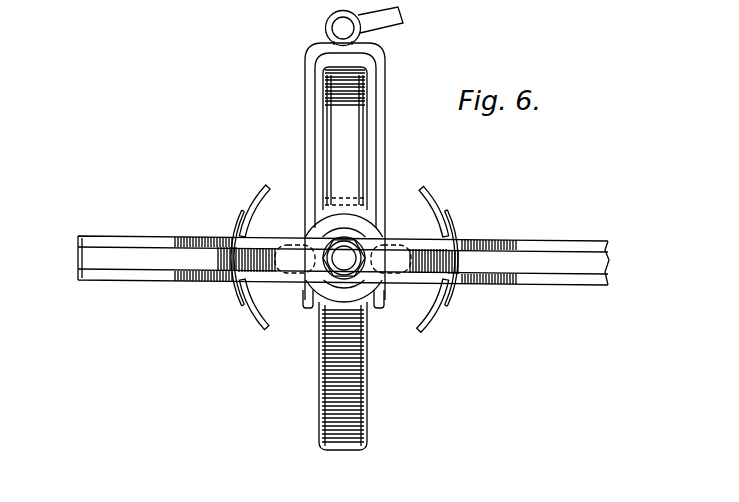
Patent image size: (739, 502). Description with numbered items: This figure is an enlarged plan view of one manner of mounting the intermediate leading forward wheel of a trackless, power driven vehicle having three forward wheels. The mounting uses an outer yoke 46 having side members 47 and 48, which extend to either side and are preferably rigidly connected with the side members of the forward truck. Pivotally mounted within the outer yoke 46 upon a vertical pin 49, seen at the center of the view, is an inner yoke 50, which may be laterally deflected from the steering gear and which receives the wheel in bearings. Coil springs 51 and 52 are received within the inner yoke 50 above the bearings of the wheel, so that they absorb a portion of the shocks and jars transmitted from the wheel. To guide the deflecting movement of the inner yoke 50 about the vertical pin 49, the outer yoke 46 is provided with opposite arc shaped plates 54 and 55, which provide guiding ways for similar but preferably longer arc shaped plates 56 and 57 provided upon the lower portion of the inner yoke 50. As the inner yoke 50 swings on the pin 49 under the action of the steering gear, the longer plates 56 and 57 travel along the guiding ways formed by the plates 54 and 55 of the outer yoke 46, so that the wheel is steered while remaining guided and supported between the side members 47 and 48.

The yoke 46 is at (478, 284).
The side member 47 is at (132, 237).
The side member 48 is at (573, 285).
The vertical pin 49 is at (332, 285).
The inner yoke 50 is at (280, 232).
The coil spring 51 is at (388, 192).
The coil spring 52 is at (233, 284).
The arc shaped plate 54 is at (238, 218).
The arc shaped plate 55 is at (456, 219).
The arc shaped plate 56 is at (264, 186).
The arc shaped plate 57 is at (425, 188).